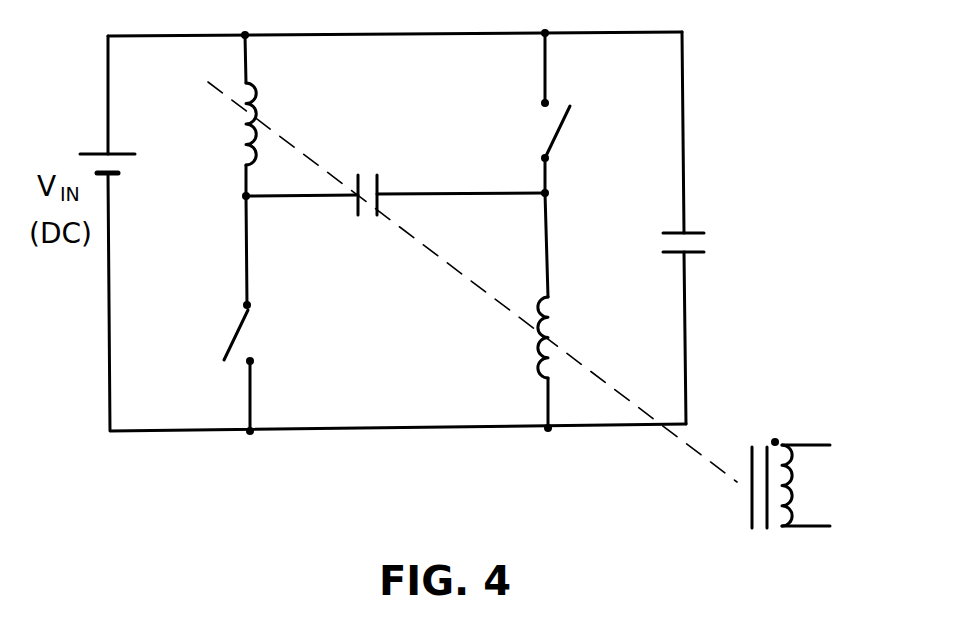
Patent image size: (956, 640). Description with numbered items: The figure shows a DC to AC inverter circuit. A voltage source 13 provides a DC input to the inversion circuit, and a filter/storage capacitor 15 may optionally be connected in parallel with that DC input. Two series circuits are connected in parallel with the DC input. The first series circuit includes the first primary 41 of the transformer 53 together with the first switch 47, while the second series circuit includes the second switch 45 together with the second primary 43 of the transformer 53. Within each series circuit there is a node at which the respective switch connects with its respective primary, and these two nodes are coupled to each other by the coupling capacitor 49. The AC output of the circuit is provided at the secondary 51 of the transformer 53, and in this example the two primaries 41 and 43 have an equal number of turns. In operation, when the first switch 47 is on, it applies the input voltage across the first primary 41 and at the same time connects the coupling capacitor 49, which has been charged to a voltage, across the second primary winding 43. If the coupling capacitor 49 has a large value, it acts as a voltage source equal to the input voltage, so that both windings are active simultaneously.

The voltage source 13 is at (95, 153).
The filter/storage capacitor 15 is at (688, 232).
The primary 41 is at (251, 85).
The primary 43 is at (541, 296).
The switch SW2 45 is at (558, 128).
The switch SW1 47 is at (234, 338).
The capacitor C1 49 is at (352, 210).
The secondary 51 is at (812, 445).
The transformer 53 is at (775, 418).